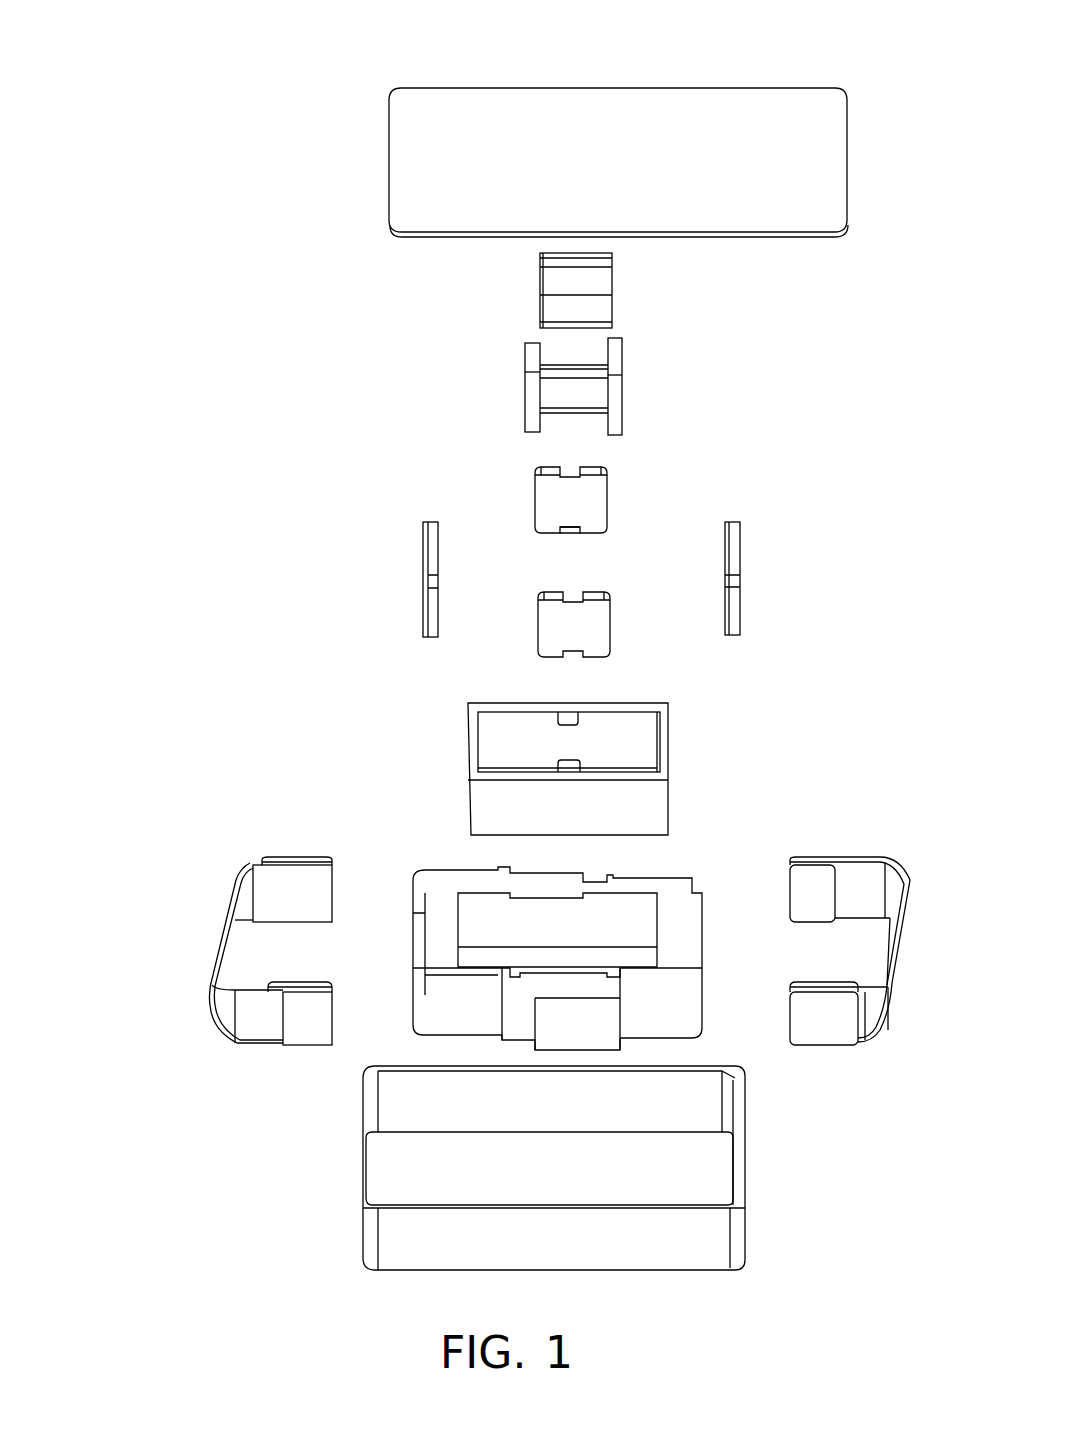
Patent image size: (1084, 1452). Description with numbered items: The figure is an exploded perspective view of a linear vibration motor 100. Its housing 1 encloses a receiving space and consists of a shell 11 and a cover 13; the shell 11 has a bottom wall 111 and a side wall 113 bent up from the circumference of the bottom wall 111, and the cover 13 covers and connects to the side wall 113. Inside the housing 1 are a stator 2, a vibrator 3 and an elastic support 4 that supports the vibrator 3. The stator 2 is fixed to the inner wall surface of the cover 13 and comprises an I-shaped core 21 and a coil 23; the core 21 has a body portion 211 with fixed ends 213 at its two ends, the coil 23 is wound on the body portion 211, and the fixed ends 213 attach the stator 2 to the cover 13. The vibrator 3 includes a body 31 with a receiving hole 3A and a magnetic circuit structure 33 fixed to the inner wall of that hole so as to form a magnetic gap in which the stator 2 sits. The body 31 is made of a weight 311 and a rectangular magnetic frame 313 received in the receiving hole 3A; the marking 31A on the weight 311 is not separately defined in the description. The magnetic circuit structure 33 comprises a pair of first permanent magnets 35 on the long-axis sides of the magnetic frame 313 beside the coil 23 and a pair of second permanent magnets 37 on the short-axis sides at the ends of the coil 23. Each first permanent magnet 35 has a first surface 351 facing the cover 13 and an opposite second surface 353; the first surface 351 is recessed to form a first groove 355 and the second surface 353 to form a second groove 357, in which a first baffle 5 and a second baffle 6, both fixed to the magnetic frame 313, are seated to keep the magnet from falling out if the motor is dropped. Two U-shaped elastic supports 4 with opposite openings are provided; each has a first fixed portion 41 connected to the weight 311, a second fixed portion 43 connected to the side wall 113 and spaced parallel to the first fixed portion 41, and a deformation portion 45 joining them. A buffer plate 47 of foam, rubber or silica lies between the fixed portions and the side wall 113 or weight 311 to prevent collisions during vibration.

The linear vibration motor 100 is at (568, 27).
The housing 1 is at (603, 155).
The cover 13 is at (428, 158).
The stator 2 is at (685, 352).
The coil 23 is at (600, 272).
The core 21 is at (671, 394).
The fixed end 213 is at (622, 358).
The body portion 211 is at (573, 402).
The vibrator 3 is at (565, 754).
The magnetic circuit structure 33 is at (554, 525).
The first permanent magnet 35 is at (577, 466).
The first surface 351 is at (548, 470).
The second surface 353 is at (543, 534).
The first groove 355 is at (573, 477).
The second groove 357 is at (576, 536).
The second permanent magnet 37 is at (540, 579).
The body 31 is at (588, 893).
The magnetic frame 313 is at (611, 753).
The weight 311 is at (594, 963).
The first baffle 5 is at (580, 718).
The second baffle 6 is at (580, 763).
The receiving hole 3A is at (632, 722).
The frame cavity 31A is at (597, 944).
The elastic support 4 is at (212, 941).
The first fixed portion 41 is at (291, 890).
The second fixed portion 43 is at (227, 1041).
The deformation portion 45 is at (218, 947).
The buffer plate 47 is at (300, 862).
The shell 11 is at (472, 1168).
The bottom wall 111 is at (432, 1178).
The side wall 113 is at (412, 1237).